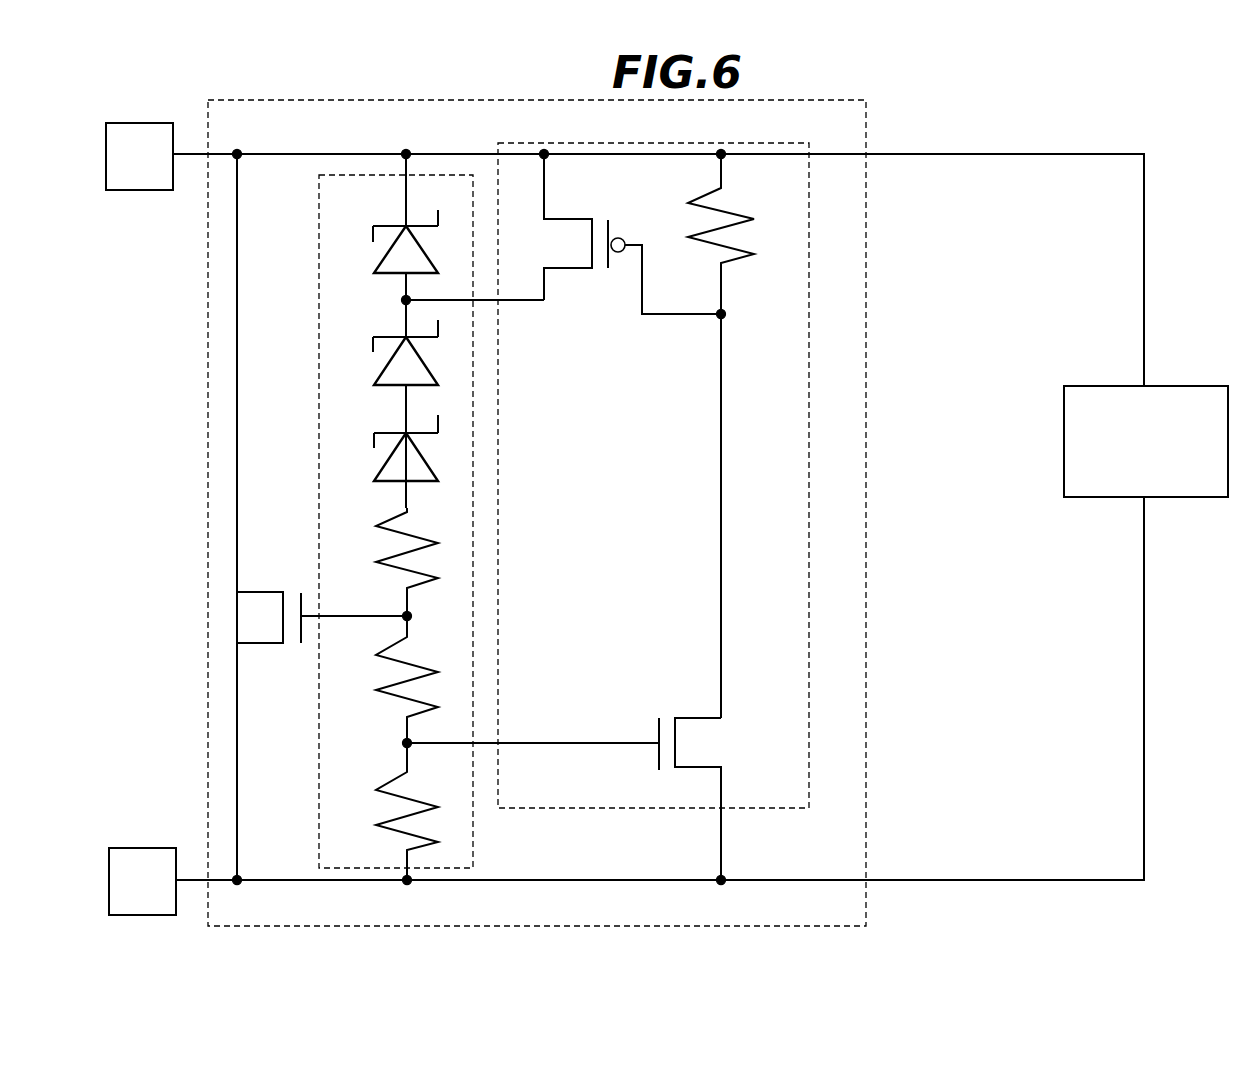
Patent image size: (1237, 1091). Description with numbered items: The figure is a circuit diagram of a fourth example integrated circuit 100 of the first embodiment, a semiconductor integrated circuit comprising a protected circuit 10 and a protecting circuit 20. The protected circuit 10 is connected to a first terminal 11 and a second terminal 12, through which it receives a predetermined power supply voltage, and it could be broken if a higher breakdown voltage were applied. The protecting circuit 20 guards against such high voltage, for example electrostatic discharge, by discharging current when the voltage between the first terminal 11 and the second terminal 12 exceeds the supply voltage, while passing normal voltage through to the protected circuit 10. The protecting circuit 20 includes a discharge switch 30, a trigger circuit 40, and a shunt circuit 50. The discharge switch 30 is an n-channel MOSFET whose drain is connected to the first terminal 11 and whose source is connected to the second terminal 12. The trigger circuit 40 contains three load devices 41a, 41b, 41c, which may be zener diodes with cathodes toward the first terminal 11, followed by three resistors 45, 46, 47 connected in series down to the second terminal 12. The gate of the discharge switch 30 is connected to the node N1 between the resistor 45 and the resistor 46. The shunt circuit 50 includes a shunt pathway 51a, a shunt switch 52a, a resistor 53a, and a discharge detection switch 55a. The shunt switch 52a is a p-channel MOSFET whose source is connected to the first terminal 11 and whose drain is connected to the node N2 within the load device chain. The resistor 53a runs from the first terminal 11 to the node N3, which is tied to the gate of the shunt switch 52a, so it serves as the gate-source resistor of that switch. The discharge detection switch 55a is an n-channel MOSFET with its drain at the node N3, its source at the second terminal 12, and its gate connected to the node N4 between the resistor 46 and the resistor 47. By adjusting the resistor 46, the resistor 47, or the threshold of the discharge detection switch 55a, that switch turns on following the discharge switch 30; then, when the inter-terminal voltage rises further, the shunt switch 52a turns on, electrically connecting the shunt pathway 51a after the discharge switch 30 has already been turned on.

The integrated circuit 100 is at (1130, 112).
The protected circuit 10 is at (1185, 385).
The first terminal 11 is at (143, 193).
The second terminal 12 is at (140, 847).
The protecting circuit 20 is at (868, 226).
The discharge switch 30 is at (260, 592).
The trigger circuit 40 is at (476, 820).
The load device 41a is at (383, 258).
The load device 41b is at (383, 369).
The load device 41c is at (383, 468).
The resistor 45 is at (378, 562).
The resistor 46 is at (378, 690).
The resistor 47 is at (378, 823).
The shunt circuit 50 is at (653, 808).
The shunt pathway 51a is at (530, 301).
The shunt switch 52a is at (570, 219).
The resistor 53a is at (688, 237).
The discharge detection switch 55a is at (697, 718).
The node N1 is at (403, 612).
The node N2 is at (402, 303).
The node N3 is at (727, 318).
The node N4 is at (404, 740).